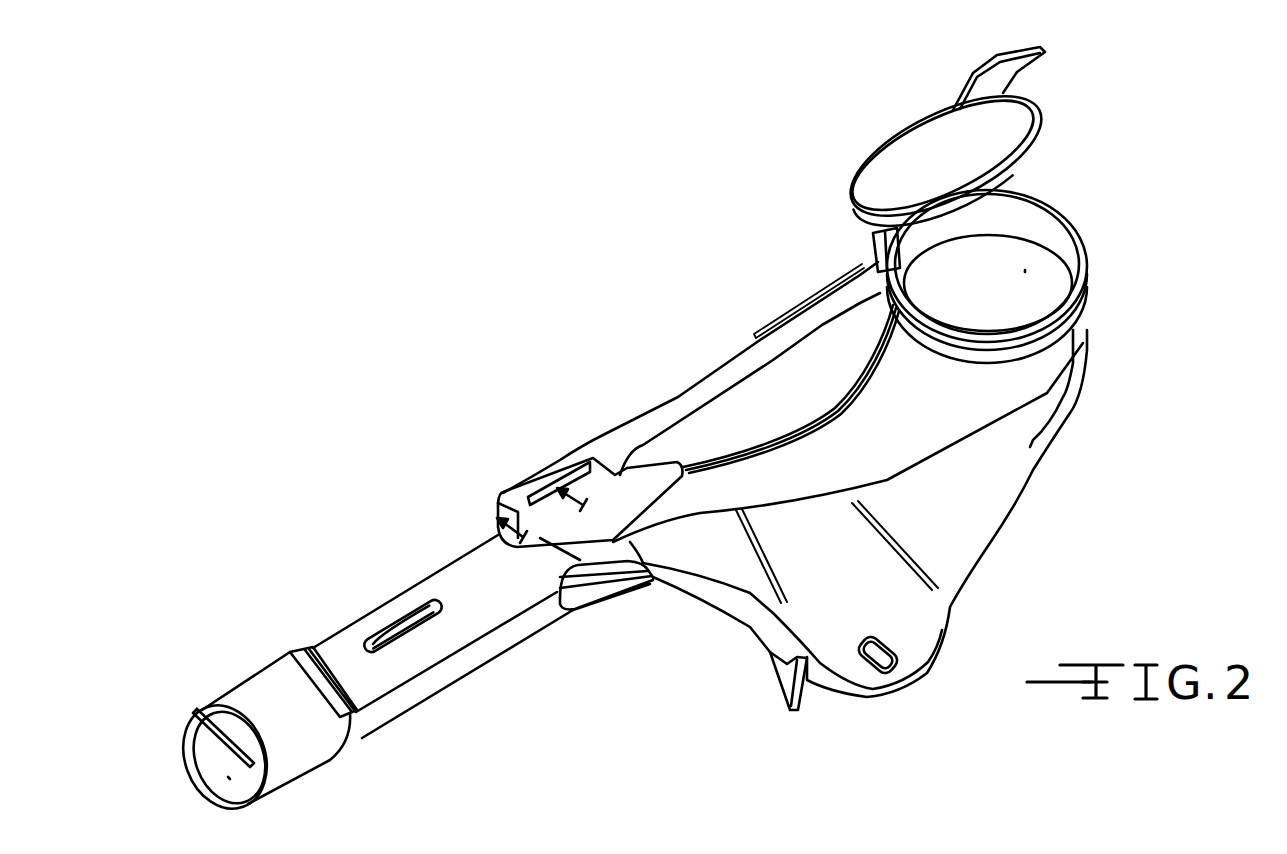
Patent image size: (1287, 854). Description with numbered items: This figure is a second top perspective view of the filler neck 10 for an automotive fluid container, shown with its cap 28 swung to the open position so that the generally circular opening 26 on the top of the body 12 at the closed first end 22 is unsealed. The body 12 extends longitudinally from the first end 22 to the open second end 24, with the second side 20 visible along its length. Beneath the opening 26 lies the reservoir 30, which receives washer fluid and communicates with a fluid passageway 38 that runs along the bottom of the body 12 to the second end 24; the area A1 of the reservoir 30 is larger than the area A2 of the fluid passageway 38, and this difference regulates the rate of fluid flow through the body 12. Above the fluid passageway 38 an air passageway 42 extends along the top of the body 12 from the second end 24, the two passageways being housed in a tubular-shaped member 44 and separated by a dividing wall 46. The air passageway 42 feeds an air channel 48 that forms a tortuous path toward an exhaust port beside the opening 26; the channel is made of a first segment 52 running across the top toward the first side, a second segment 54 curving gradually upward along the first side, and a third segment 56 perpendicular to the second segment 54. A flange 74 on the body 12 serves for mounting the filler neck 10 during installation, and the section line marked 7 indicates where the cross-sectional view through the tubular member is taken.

The filler neck 10 is at (611, 237).
The body 12 is at (1013, 392).
The second side 20 is at (522, 622).
The first end 22 is at (1080, 378).
The second end 24 is at (230, 688).
The opening 26 is at (1015, 215).
The cap 28 is at (922, 127).
The reservoir 30 is at (1025, 295).
The fluid passageway 38 is at (228, 775).
The air passageway 42 is at (255, 718).
The tubular-shaped member 44 is at (432, 575).
The dividing wall 46 is at (215, 732).
The air channel 48 is at (678, 397).
The first segment 52 is at (515, 490).
The second segment 54 is at (750, 350).
The third segment 56 is at (870, 245).
The flange 74 is at (915, 610).
The section line 7 is at (532, 520).
The area of the reservoir A1 is at (1025, 270).
The area of the fluid passageway A2 is at (230, 777).